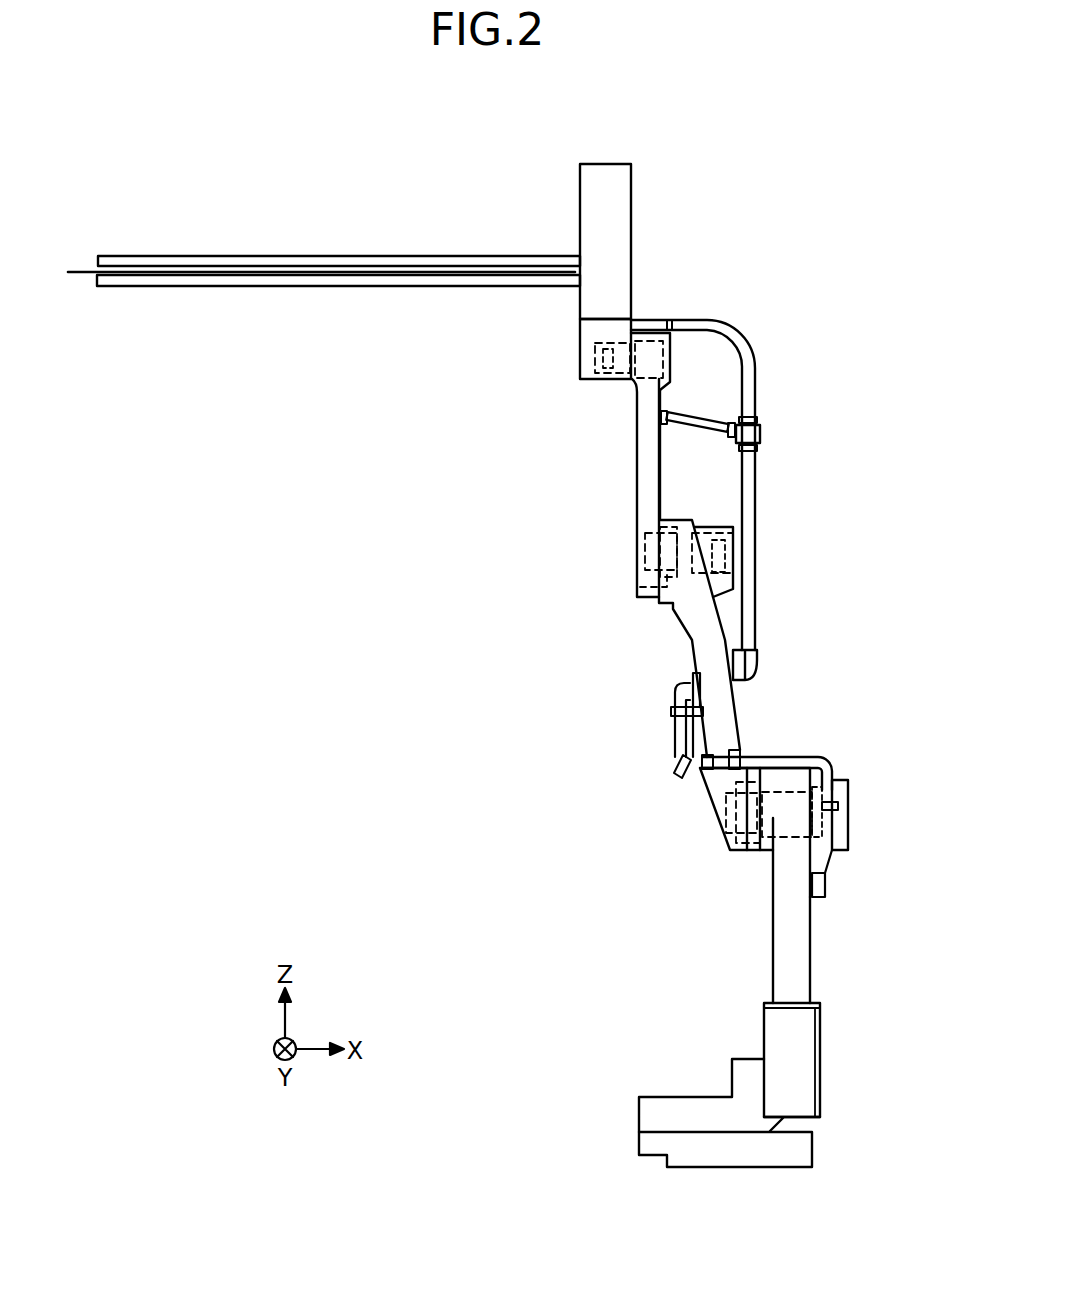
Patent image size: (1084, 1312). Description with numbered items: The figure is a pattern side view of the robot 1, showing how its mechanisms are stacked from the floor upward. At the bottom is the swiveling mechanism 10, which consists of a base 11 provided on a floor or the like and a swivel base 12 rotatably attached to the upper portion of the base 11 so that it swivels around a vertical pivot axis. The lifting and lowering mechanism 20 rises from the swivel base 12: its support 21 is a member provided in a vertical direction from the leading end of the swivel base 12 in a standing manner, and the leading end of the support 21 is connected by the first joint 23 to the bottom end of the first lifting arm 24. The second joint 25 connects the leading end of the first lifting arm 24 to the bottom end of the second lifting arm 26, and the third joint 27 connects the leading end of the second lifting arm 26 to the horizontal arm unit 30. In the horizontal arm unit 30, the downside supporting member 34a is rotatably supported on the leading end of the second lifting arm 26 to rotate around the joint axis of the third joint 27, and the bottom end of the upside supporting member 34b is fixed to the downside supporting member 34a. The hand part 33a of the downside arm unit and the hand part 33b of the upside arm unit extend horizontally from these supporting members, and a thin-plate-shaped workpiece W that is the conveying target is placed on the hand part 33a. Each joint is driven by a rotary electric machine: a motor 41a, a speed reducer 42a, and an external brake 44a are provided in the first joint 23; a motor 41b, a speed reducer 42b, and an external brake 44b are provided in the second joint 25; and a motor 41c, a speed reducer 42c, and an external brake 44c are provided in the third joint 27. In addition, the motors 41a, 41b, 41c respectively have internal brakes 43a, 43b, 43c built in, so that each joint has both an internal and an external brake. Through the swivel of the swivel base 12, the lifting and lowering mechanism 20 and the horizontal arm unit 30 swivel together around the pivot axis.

The robot 1 is at (266, 170).
The swiveling mechanism 10 is at (625, 1070).
The base 11 is at (699, 1153).
The swivel base 12 is at (685, 1107).
The lifting and lowering mechanism 20 is at (882, 509).
The support 21 is at (798, 945).
The first joint 23 is at (688, 882).
The first lifting arm 24 is at (722, 724).
The second joint 25 is at (583, 628).
The second lifting arm 26 is at (645, 472).
The third joint 27 is at (556, 393).
The horizontal arm unit 30 is at (546, 172).
The hand part 33a is at (350, 286).
The hand part 33b is at (342, 262).
The downside supporting member 34a is at (580, 327).
The upside supporting member 34b is at (588, 216).
The motor 41a is at (788, 785).
The motor 41b is at (740, 545).
The motor 41c is at (590, 355).
The speed reducer 42a is at (757, 845).
The speed reducer 42b is at (640, 585).
The speed reducer 42c is at (640, 337).
The internal brake 43a is at (850, 822).
The internal brake 43b is at (740, 577).
The internal brake 43c is at (607, 372).
The external brake 44a is at (715, 803).
The external brake 44b is at (644, 550).
The external brake 44c is at (670, 353).
The workpiece W is at (72, 268).